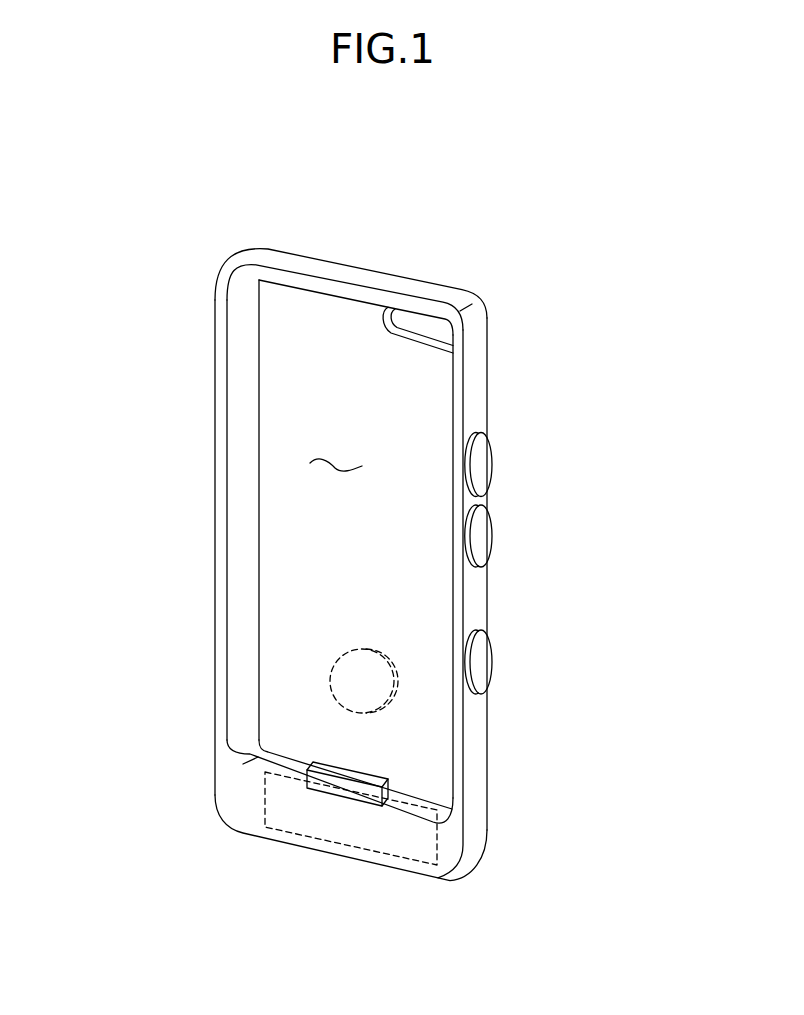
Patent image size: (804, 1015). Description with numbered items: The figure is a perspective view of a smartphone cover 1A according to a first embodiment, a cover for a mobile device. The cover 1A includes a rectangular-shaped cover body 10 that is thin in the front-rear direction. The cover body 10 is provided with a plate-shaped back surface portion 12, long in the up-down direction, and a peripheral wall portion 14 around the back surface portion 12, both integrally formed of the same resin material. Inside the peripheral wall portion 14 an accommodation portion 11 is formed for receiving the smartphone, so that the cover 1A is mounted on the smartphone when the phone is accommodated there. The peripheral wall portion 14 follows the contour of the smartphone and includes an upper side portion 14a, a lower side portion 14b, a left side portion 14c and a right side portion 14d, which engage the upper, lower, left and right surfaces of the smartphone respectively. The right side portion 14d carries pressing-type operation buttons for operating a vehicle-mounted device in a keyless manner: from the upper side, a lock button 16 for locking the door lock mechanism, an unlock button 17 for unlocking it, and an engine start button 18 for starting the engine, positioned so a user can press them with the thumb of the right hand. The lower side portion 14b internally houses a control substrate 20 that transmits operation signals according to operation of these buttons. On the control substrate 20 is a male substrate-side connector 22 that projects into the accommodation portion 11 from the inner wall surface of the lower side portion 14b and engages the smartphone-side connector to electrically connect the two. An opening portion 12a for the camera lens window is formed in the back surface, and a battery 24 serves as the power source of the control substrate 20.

The smartphone cover 1A is at (500, 185).
The cover body 10 is at (312, 252).
The accommodation portion 11 is at (336, 450).
The back surface portion 12 is at (403, 379).
The opening portion for a camera 12a is at (420, 327).
The peripheral wall portion 14 is at (215, 412).
The upper side portion 14a is at (283, 253).
The lower side portion 14b is at (262, 838).
The left side portion 14c is at (215, 578).
The right side portion 14d is at (480, 595).
The lock button 16 is at (482, 462).
The unlock button 17 is at (487, 537).
The engine start button 18 is at (483, 658).
The control substrate 20 is at (383, 833).
The substrate-side connector 22 is at (370, 781).
The battery 24 is at (347, 655).